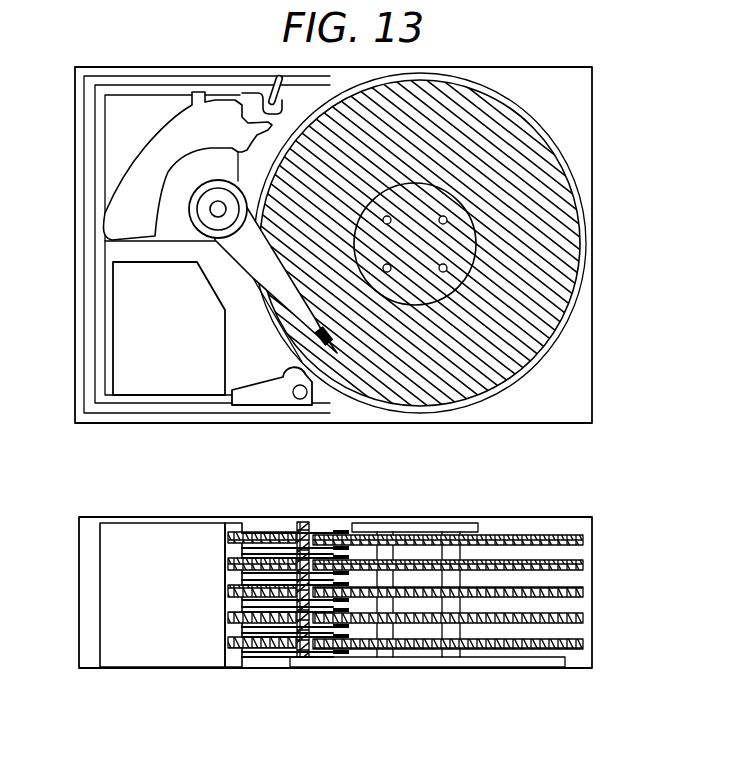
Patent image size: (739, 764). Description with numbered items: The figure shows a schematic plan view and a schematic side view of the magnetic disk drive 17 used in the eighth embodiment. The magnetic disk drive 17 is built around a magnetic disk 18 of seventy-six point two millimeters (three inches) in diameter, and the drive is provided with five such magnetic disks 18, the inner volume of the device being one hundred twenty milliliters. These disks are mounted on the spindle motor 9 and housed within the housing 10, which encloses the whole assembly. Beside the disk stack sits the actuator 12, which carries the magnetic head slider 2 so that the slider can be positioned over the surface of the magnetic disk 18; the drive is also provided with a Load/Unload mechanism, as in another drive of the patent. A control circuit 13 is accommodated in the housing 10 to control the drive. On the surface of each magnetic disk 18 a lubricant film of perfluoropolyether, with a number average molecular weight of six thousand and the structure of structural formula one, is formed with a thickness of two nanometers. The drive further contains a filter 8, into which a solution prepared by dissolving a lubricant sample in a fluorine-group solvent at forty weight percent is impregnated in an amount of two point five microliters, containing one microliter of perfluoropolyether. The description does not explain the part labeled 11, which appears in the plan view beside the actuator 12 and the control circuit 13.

The magnetic head slider 2 is at (329, 346).
The filter 8 is at (276, 72).
The spindle motor 9 is at (458, 643).
The housing 10 is at (593, 533).
The connector bracket 11 is at (280, 407).
The actuator 12 is at (193, 230).
The control circuit 13 is at (105, 382).
The magnetic disk drive 17 is at (76, 556).
The magnetic disk 18 is at (513, 340).